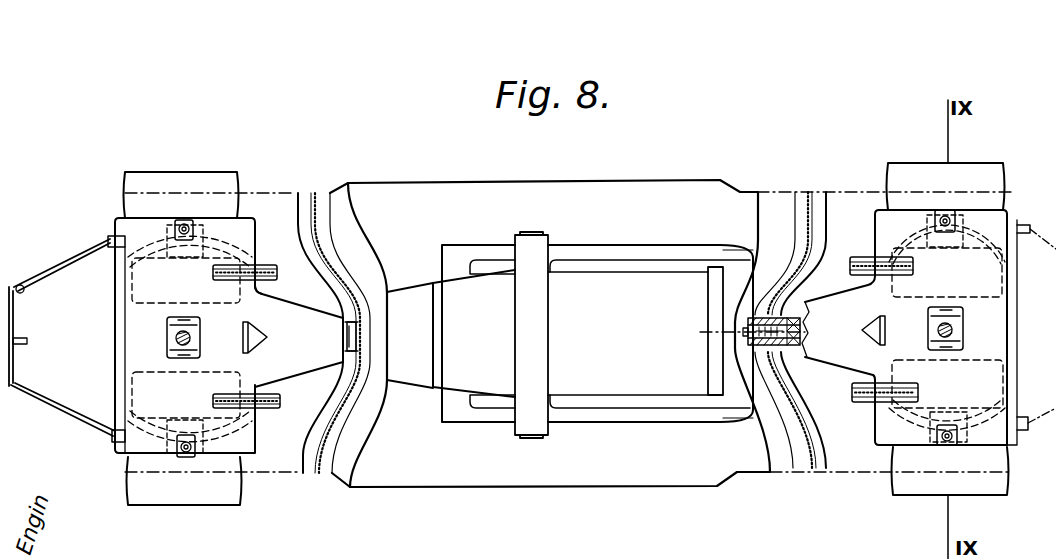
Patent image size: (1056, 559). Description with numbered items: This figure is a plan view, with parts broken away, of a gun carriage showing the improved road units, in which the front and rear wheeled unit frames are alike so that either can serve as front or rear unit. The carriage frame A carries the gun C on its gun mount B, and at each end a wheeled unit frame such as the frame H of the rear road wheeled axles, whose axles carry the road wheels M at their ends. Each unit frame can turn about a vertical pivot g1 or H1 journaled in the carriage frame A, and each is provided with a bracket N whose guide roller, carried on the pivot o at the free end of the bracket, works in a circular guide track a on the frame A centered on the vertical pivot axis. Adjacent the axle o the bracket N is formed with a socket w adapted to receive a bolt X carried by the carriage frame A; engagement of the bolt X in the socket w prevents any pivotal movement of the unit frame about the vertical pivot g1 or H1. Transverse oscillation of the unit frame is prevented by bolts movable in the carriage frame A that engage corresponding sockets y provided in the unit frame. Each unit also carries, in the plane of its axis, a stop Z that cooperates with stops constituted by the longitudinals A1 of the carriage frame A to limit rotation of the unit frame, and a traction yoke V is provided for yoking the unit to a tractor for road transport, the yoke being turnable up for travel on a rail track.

The carriage frame A is at (526, 188).
The guide a is at (347, 274).
The longitudinal pivot o is at (357, 342).
The bracket N is at (311, 362).
The gun mount B is at (628, 251).
The gun C is at (450, 378).
The bolt X is at (757, 328).
The socket w is at (792, 348).
The frame of the rear road wheeled axles H is at (133, 229).
The road wheels M is at (172, 178).
The sockets y is at (190, 224).
The traction yoke V is at (46, 272).
The longitudinals A1 is at (265, 272).
The stop Z is at (262, 337).
The vertical pivot H1 is at (172, 338).
The vertical pivot g1 is at (958, 330).